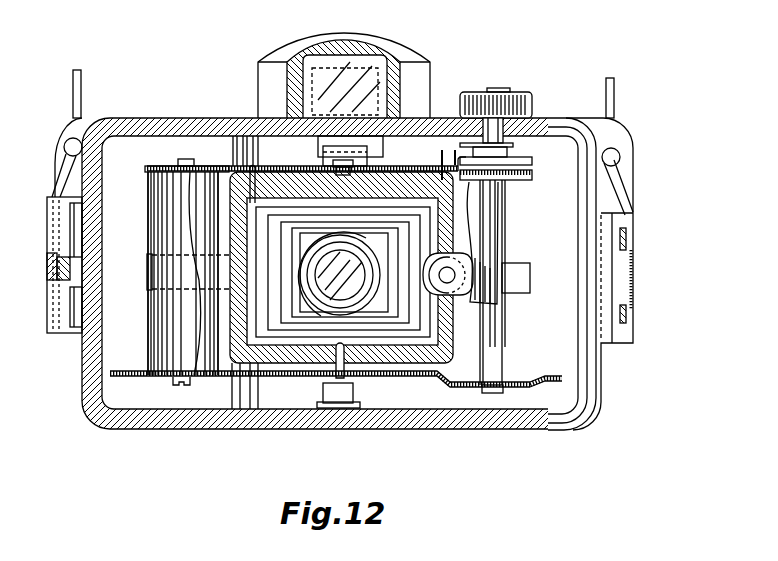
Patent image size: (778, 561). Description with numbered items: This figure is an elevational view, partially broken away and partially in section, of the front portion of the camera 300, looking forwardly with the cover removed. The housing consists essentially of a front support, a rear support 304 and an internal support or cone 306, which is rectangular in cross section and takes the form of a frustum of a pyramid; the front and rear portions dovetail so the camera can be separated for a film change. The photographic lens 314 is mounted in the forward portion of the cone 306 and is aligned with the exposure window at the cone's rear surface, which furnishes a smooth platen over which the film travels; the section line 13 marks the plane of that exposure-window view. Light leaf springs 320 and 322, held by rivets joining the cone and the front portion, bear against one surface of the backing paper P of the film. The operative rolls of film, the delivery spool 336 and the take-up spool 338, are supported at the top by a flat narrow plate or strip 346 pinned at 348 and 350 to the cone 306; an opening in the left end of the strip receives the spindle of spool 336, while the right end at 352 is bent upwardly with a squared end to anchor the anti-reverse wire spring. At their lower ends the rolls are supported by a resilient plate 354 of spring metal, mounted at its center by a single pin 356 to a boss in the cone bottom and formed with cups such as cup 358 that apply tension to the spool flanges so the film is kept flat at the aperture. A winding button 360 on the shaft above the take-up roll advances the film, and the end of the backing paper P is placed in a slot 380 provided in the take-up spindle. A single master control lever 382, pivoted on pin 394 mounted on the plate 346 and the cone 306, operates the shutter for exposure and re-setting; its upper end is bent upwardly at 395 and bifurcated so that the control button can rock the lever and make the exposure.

The section line for Figure 13 is at (341, 0).
The camera 300 is at (608, 385).
The rear support 304 is at (89, 410).
The internal support or cone 306 is at (268, 362).
The photographic lens 314 is at (351, 290).
The light leaf spring 320 is at (148, 276).
The light leaf spring 322 is at (524, 286).
The delivery spool of film 336 is at (166, 166).
The take-up spool 338 is at (503, 384).
The flat narrow plate or strip 346 is at (320, 166).
The pin 348 is at (238, 167).
The pin 350 is at (425, 168).
The bent-up extension of strip 352 is at (533, 166).
The resilient plate 354 is at (405, 378).
The pin 356 is at (336, 377).
The cup 358 is at (170, 383).
The winding button 360 is at (534, 105).
The slot 380 is at (498, 349).
The master control lever 382 is at (442, 172).
The pivot pin 394 is at (332, 172).
The bent-up end of master lever 395 is at (453, 158).
The backing paper P is at (165, 213).